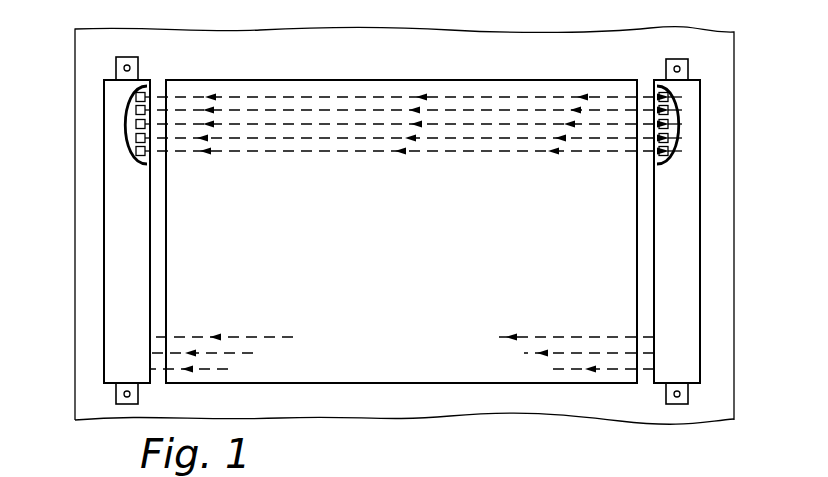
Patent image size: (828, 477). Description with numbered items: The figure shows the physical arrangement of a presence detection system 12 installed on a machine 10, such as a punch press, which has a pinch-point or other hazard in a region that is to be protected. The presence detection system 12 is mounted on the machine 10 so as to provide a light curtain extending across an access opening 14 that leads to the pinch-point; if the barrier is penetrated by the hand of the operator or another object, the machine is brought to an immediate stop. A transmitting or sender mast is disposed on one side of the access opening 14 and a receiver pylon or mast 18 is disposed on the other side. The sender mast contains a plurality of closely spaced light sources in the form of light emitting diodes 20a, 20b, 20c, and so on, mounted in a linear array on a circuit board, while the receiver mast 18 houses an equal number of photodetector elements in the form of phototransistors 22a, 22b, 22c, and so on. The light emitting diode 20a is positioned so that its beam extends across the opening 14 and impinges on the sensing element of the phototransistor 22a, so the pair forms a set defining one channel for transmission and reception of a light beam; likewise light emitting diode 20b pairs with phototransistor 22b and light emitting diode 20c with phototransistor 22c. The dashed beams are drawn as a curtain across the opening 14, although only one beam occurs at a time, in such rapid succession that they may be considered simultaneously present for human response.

The machine 10 is at (706, 32).
The presence detection system 12 is at (230, 44).
The access opening 14 is at (418, 372).
The receiver pylon or mast 18 is at (104, 228).
The light emitting diode 20a is at (659, 92).
The light emitting diode 20b is at (660, 113).
The light emitting diode 20c is at (668, 126).
The phototransistor 22a is at (136, 97).
The phototransistor 22b is at (136, 112).
The phototransistor 22c is at (136, 124).